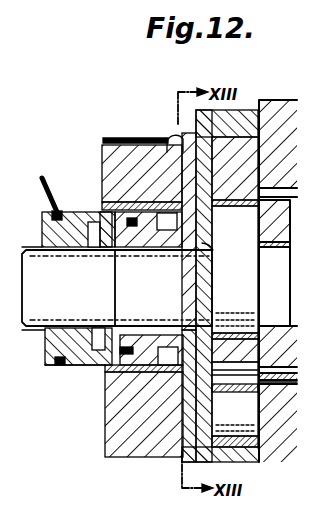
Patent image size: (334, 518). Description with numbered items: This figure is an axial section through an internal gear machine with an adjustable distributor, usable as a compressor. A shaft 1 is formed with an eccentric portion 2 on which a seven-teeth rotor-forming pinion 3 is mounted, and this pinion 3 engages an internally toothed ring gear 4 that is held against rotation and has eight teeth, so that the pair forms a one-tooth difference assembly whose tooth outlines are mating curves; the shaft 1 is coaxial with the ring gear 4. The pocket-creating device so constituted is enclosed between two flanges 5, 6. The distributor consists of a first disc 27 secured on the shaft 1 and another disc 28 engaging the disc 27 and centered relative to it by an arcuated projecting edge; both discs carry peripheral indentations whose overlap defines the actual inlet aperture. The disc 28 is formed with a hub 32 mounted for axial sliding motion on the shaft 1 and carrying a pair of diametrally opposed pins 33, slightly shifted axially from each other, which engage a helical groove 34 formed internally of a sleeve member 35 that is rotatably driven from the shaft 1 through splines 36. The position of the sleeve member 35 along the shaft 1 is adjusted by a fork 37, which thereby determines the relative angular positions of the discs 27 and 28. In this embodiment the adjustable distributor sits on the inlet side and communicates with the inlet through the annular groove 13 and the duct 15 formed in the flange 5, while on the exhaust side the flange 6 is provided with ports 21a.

The shaft 1 is at (117, 288).
The eccentric portion 2 is at (235, 321).
The pinion 3 is at (219, 206).
The ring gear 4 is at (265, 111).
The flange 5 is at (110, 158).
The flange 6 is at (297, 384).
The annular groove 13 is at (184, 428).
The duct 15 is at (113, 141).
The ports 21a is at (320, 185).
The first disc 27 is at (222, 284).
The disc 28 is at (160, 141).
The hub 32 is at (136, 252).
The pins 33 is at (105, 393).
The helical groove 34 is at (103, 252).
The sleeve member 35 is at (47, 365).
The splines 36 is at (30, 248).
The fork 37 is at (55, 190).